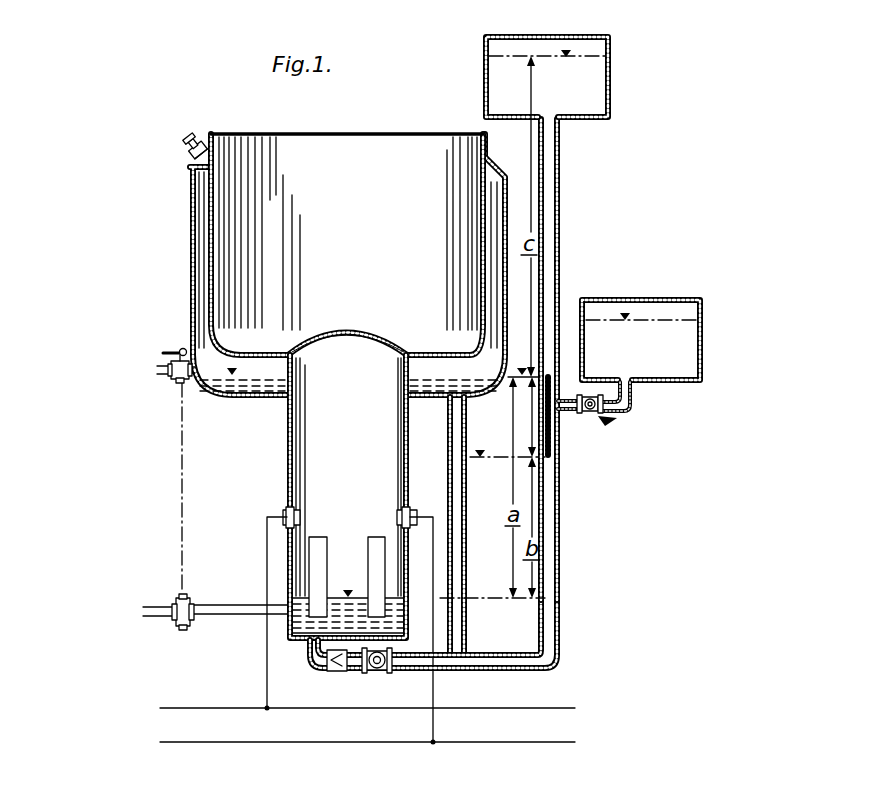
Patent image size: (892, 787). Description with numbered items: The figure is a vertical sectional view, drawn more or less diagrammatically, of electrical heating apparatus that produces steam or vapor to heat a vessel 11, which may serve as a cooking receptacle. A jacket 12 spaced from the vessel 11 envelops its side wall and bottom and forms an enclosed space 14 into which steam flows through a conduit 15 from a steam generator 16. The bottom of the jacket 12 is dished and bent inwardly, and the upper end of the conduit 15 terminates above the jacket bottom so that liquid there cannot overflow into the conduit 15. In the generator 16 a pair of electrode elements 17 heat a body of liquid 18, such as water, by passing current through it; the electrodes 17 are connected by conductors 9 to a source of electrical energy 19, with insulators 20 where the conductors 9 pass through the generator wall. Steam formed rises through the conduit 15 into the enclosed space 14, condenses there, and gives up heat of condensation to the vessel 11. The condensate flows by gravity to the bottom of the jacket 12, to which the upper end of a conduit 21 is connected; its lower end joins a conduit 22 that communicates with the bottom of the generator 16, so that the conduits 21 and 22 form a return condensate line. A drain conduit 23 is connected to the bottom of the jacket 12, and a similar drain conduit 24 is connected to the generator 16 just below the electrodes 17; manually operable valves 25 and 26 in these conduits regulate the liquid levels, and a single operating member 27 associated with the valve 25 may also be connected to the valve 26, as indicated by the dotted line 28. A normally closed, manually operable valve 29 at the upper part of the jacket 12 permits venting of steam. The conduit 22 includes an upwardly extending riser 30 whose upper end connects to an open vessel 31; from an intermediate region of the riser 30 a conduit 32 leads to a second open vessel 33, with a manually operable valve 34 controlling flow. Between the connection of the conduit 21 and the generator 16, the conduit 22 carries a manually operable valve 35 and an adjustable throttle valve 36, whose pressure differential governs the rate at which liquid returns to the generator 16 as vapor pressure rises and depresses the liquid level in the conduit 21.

The conductors 9 is at (262, 560).
The vessel 11 is at (218, 213).
The jacket 12 is at (192, 252).
The enclosed space 14 is at (208, 298).
The conduit 15 is at (287, 427).
The steam generator 16 is at (290, 645).
The electrode elements 17 is at (377, 537).
The body of liquid 18 is at (363, 597).
The source of electrical energy 19 is at (162, 712).
The insulators 20 is at (283, 512).
The conduit 21 is at (468, 463).
The conduit 22 is at (461, 671).
The drain conduit 23 is at (171, 379).
The drain conduit 24 is at (240, 618).
The manually operable valve 25 is at (146, 401).
The manually operable valve 26 is at (176, 600).
The operating member 27 is at (165, 351).
The dotted line 28 is at (174, 496).
The manually operable valve 29 is at (199, 137).
The riser 30 is at (559, 480).
The open vessel 31 is at (611, 93).
The conduit 32 is at (606, 408).
The second open vessel 33 is at (703, 357).
The manually operable valve 34 is at (604, 422).
The manually operable valve 35 is at (380, 673).
The adjustable throttle valve 36 is at (333, 672).